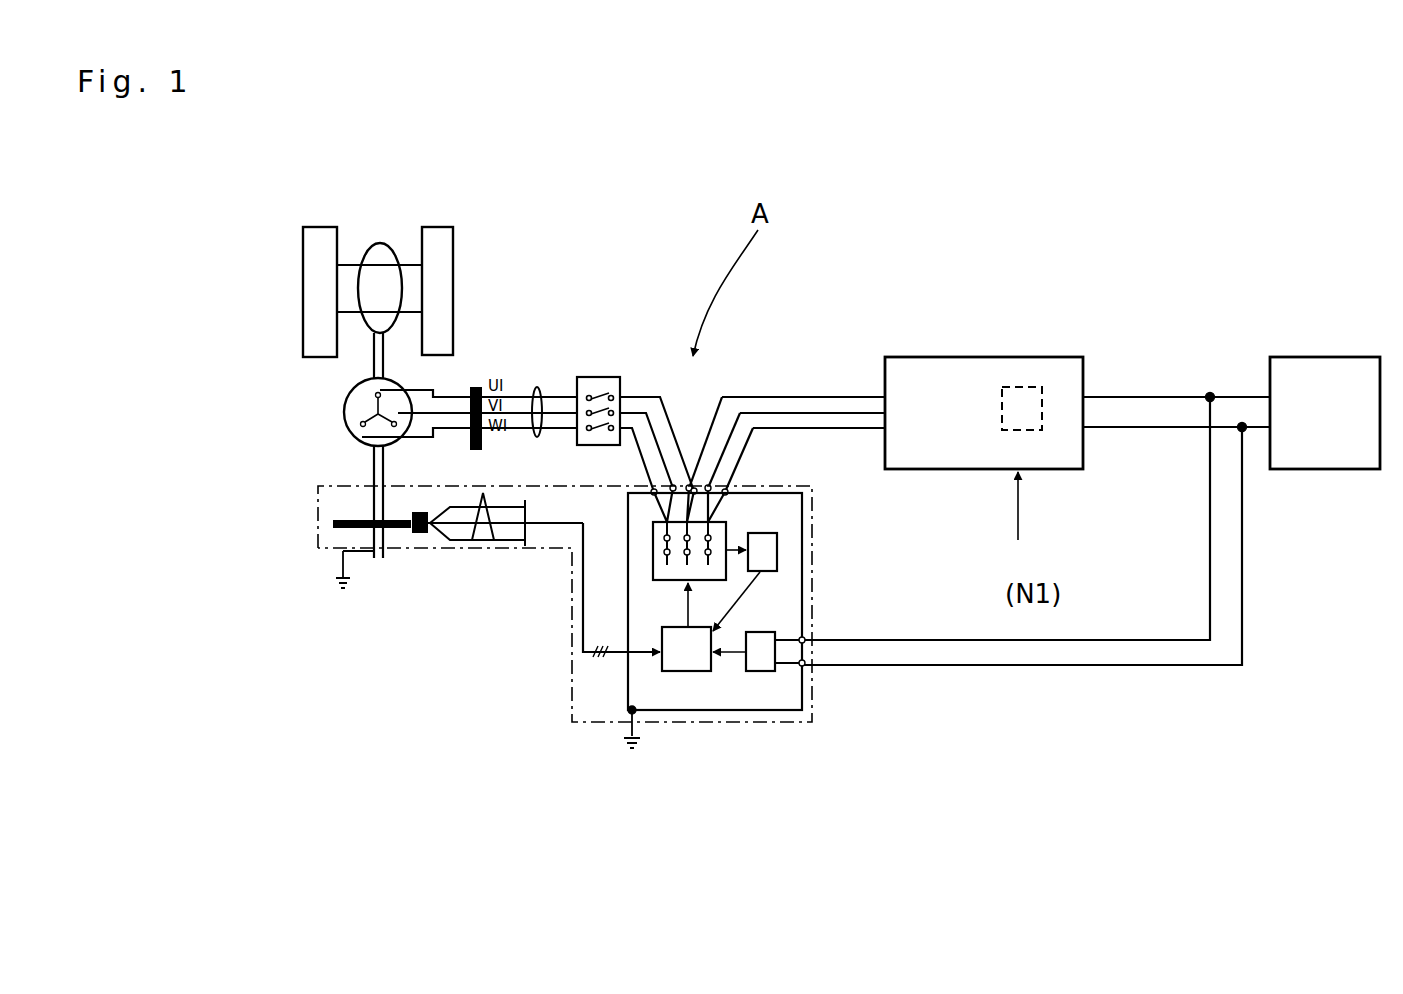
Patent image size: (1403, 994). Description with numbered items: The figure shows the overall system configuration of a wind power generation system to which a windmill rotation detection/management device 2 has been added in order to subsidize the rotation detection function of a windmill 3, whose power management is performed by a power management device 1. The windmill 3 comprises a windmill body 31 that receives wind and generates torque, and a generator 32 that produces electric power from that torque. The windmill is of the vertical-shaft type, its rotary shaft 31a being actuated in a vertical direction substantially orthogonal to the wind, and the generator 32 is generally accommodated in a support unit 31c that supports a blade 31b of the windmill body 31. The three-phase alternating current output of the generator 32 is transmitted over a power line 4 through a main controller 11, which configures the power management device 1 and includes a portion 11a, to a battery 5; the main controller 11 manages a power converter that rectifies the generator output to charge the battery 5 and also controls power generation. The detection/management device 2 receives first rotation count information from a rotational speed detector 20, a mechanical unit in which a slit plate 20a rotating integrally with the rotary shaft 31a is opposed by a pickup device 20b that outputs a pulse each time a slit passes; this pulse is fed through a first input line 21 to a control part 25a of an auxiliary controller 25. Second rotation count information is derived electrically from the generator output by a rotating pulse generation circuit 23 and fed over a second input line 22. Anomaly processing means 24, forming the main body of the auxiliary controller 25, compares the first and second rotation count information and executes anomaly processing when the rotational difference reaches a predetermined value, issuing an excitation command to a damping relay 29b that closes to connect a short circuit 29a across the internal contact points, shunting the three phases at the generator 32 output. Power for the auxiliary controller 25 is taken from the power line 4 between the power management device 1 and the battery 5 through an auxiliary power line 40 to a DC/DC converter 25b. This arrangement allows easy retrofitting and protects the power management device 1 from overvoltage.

The power management device 1 is at (925, 341).
The windmill rotation detection/management device 2 is at (568, 683).
The windmill 3 is at (480, 262).
The power line 4 is at (750, 391).
The battery 5 is at (1322, 357).
The main controller 11 is at (1007, 357).
The detection portion 11a is at (1032, 387).
The rotational speed detector 20 is at (405, 542).
The slit plate 20a is at (338, 525).
The pickup device 20b is at (426, 536).
The first input line 21 is at (614, 655).
The second input line 22 is at (762, 577).
The rotating pulse generation circuit 23 is at (779, 540).
The anomaly processing means 24 is at (744, 694).
The auxiliary controller 25 is at (778, 545).
The control part 25a is at (689, 672).
The DC/DC converter 25b is at (765, 673).
The short circuit 29a is at (712, 540).
The damping relay 29b is at (662, 548).
The windmill body 31 is at (432, 212).
The rotary shaft 31a is at (366, 360).
The blade 31b is at (305, 228).
The support unit 31c is at (382, 283).
The generator 32 is at (358, 434).
The auxiliary power line 40 is at (1100, 670).